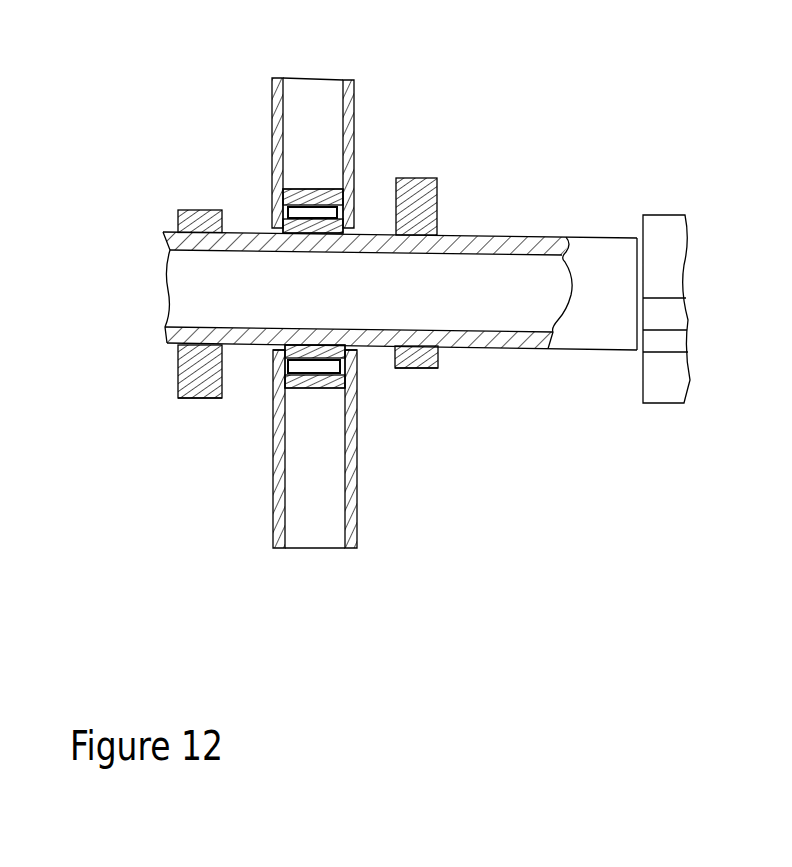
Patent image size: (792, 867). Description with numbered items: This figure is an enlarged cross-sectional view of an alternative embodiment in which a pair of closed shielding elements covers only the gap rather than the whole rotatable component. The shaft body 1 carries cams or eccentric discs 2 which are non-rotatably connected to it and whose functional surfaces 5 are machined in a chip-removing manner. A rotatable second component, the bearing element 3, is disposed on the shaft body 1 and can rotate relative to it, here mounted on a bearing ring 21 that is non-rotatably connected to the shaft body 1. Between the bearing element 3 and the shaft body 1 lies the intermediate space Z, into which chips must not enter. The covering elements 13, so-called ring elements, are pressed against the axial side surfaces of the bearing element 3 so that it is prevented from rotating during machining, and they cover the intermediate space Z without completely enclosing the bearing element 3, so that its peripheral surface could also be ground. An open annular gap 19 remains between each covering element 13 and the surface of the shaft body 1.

The shaft body 1 is at (583, 265).
The cams or eccentric discs 2 is at (183, 368).
The bearing element 3 is at (317, 187).
The functional surfaces 5 is at (205, 418).
The covering elements 13 is at (273, 93).
The annular gap 19 is at (273, 348).
The bearing ring 21 is at (350, 213).
The intermediate space Z is at (278, 182).